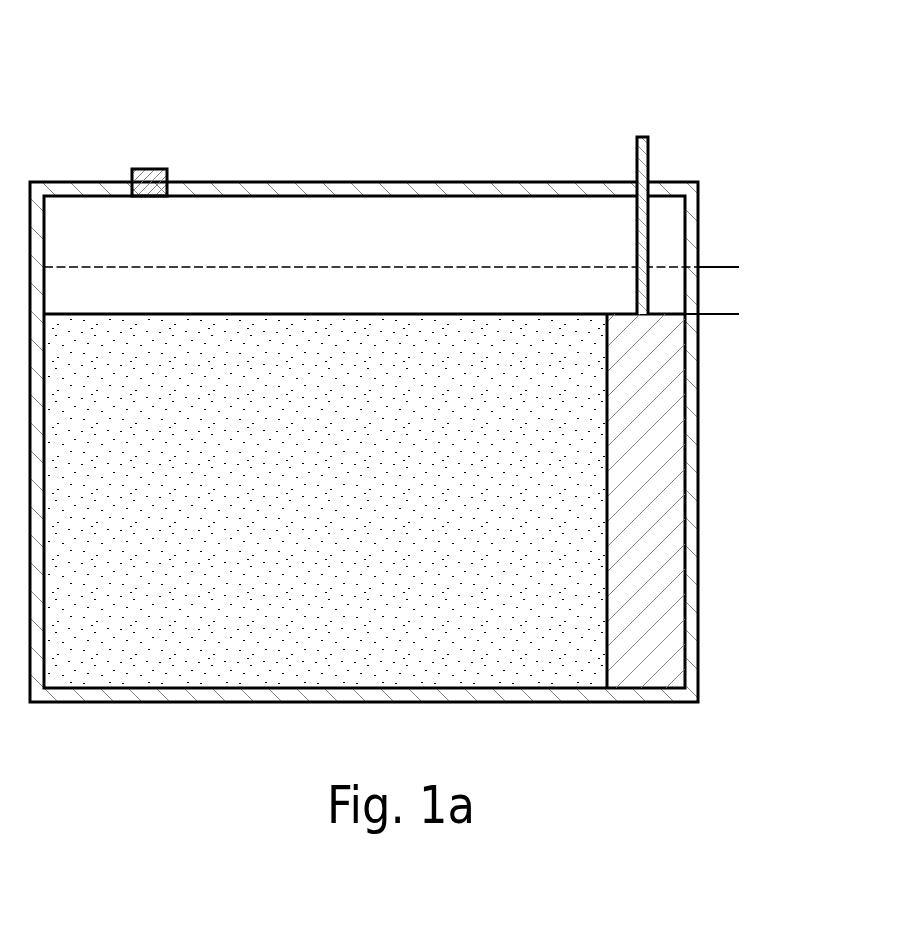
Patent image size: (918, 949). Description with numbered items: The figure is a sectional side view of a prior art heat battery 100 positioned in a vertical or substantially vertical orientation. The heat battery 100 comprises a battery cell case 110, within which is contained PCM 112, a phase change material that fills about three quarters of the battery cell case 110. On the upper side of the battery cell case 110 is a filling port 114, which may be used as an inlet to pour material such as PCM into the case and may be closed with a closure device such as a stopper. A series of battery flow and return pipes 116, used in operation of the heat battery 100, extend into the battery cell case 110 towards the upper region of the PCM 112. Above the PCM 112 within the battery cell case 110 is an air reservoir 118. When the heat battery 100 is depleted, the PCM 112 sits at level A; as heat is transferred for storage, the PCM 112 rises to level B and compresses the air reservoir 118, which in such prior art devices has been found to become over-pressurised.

The heat battery 100 is at (412, 362).
The battery cell case 110 is at (697, 627).
The PCM 112 is at (568, 527).
The filling port 114 is at (153, 150).
The battery flow and return pipes 116 is at (658, 127).
The air reservoir 118 is at (745, 430).